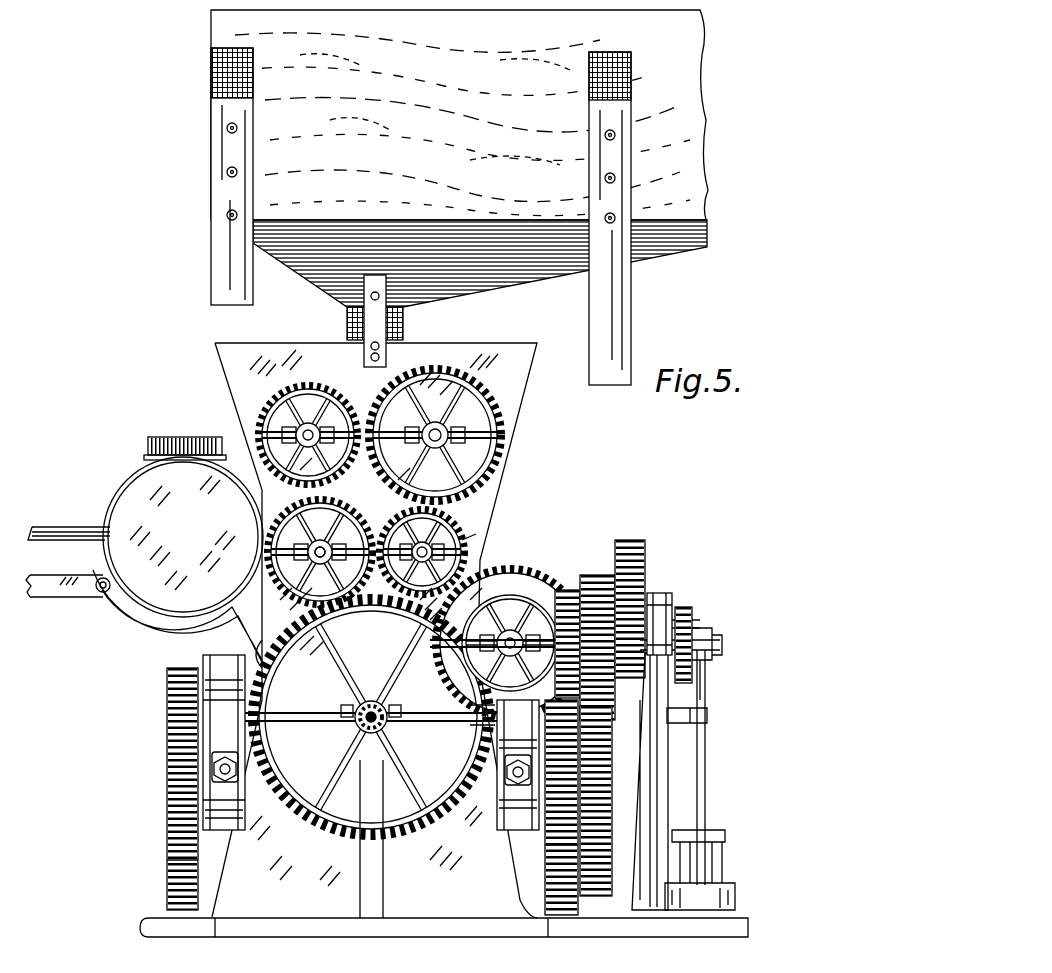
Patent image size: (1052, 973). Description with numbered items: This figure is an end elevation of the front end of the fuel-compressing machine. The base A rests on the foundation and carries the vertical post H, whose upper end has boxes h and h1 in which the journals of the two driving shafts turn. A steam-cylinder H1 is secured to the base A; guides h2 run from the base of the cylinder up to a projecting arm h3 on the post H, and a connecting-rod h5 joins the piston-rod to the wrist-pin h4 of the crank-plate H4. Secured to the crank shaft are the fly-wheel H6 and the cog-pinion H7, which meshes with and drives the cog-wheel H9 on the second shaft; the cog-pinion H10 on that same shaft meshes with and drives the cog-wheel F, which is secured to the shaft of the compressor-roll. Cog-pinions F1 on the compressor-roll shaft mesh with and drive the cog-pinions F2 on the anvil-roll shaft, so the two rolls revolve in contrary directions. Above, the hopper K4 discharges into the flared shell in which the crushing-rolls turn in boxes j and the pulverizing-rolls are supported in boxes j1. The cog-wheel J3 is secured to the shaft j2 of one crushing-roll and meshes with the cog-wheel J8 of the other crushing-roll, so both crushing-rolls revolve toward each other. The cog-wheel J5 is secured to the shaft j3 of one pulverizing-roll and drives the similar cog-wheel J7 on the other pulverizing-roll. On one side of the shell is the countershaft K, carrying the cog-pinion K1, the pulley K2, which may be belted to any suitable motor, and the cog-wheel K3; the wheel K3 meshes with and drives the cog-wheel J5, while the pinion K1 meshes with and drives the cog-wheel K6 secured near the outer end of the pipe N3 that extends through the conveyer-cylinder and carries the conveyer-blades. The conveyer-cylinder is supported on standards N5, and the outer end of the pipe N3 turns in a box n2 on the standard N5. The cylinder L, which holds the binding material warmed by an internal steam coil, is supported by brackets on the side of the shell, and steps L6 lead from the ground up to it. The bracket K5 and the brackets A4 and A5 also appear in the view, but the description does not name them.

The hopper K4 is at (459, 115).
The bracket K5 is at (150, 648).
The cog-wheel J8 is at (308, 416).
The cog-wheel J3 is at (441, 430).
The boxes j is at (472, 418).
The shaft j2 is at (425, 475).
The cog-wheel J7 is at (321, 543).
The cog-wheel J5 is at (472, 556).
The boxes j1 is at (476, 534).
The shaft j3 is at (372, 625).
The cog-wheel K6 is at (328, 835).
The standards N5 is at (370, 717).
The pipe N3 is at (361, 717).
The box n2 is at (340, 713).
The cog-pinion K1 is at (540, 580).
The countershaft K is at (470, 655).
The pulley K2 is at (470, 740).
The cog-wheel K3 is at (575, 600).
The fly-wheel H6 is at (615, 580).
The cog-wheel H9 is at (630, 540).
The cog-pinion H7 is at (610, 787).
The cog-wheel F is at (578, 760).
The cog-pinions F1 is at (625, 718).
The cog-pinions F2 is at (612, 832).
The base A is at (440, 928).
The bearing bracket A4 is at (224, 742).
The bearing bracket A5 is at (518, 765).
The cylinder L is at (183, 527).
The steps L6 is at (58, 598).
The post H is at (672, 762).
The steam-cylinder H1 is at (712, 895).
The guides h2 is at (705, 800).
The connecting-rod h5 is at (706, 692).
The projecting arm h3 is at (707, 716).
The crank-plate H4 is at (712, 644).
The wrist-pin h4 is at (722, 648).
The cog-pinion H10 is at (672, 605).
The box h1 is at (700, 624).
The box h is at (692, 630).